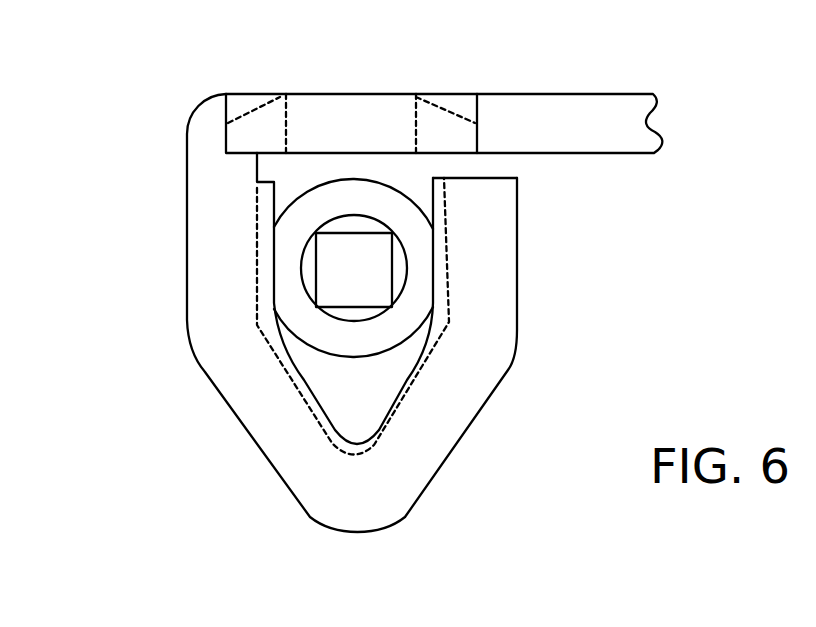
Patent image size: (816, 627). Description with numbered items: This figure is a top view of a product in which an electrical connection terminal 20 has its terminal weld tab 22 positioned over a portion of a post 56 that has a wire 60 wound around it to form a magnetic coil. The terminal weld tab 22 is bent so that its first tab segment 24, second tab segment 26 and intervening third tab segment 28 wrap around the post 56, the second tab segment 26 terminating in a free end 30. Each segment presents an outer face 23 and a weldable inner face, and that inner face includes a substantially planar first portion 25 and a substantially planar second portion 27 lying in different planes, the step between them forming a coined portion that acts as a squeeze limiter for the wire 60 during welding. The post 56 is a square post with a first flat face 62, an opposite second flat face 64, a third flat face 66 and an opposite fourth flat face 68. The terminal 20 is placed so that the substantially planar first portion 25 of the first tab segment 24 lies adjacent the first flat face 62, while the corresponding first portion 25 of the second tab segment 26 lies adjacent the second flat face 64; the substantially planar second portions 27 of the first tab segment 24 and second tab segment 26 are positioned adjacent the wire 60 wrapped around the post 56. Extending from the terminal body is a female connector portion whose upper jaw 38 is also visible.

The electrical connection terminal 20 is at (453, 63).
The terminal weld tab 22 is at (408, 530).
The outer face 23 is at (187, 217).
The first tab segment 24 is at (215, 277).
The substantially planar first portion 25 is at (282, 244).
The second tab segment 26 is at (475, 317).
The substantially planar second portion 27 is at (254, 199).
The third tab segment 28 is at (343, 491).
The free end 30 is at (490, 178).
The upper jaw 38 is at (562, 113).
The post 56 is at (340, 272).
The wire 60 is at (340, 197).
The first flat face 62 is at (317, 260).
The second flat face 64 is at (392, 288).
The third flat face 66 is at (353, 307).
The fourth flat face 68 is at (365, 232).